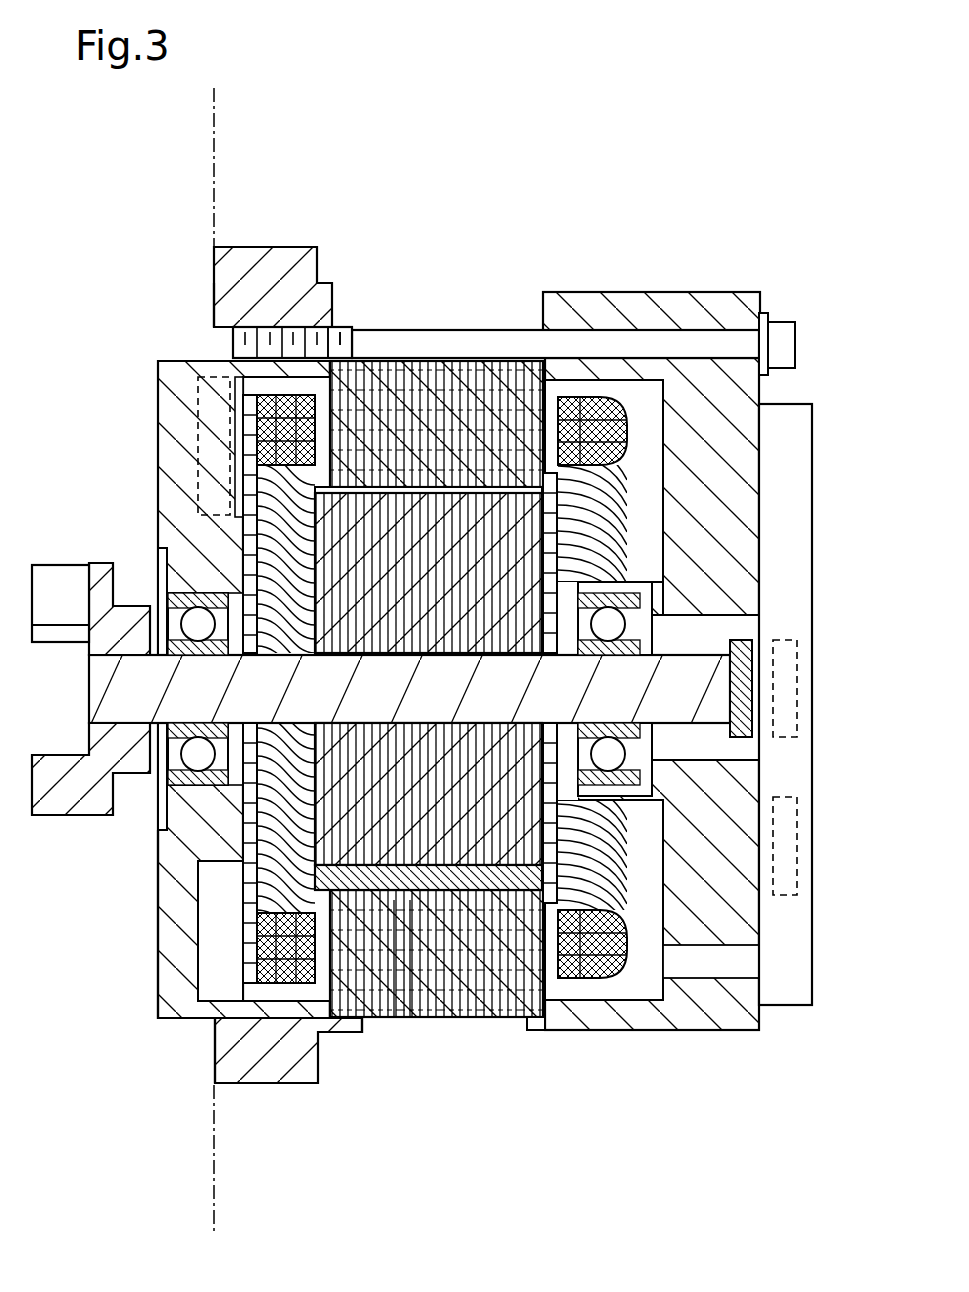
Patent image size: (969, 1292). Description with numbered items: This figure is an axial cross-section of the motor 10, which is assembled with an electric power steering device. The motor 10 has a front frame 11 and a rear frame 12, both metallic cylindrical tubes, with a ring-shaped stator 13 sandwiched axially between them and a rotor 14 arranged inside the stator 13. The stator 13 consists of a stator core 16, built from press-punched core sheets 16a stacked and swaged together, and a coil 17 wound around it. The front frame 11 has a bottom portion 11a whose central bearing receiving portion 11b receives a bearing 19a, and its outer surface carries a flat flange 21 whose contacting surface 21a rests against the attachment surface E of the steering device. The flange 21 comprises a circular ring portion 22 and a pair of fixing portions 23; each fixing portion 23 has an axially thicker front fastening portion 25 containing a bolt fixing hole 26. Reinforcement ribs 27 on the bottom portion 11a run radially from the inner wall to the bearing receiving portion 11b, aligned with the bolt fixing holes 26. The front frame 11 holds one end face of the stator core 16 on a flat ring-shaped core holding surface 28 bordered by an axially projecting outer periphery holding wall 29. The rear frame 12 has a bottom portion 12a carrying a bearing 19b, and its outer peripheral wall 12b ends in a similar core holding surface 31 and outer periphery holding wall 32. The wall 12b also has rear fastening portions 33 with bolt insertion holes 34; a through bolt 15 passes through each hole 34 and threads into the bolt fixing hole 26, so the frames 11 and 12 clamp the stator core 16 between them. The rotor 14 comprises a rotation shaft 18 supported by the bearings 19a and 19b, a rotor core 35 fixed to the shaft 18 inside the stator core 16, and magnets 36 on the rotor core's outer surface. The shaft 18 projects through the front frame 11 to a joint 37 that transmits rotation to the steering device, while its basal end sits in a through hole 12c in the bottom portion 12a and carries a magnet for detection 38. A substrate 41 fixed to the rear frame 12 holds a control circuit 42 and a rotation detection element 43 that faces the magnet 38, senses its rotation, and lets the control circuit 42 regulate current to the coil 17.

The motor 10 is at (633, 222).
The front frame 11 is at (158, 407).
The bottom portion 11a is at (185, 928).
The bearing receiving portion 11b is at (198, 558).
The rear frame 12 is at (762, 436).
The bottom portion 12a is at (740, 510).
The outer peripheral wall 12b is at (600, 1030).
The through hole 12c is at (757, 628).
The stator 13 is at (620, 975).
The rotor 14 is at (323, 868).
The through bolt 15 is at (468, 332).
The stator core 16 is at (462, 1018).
The core sheets 16a is at (410, 1010).
The coil 17 is at (625, 478).
The rotation shaft 18 is at (105, 678).
The bearing 19a is at (185, 770).
The bearing 19b is at (640, 637).
The flange 21 is at (302, 1083).
The contacting surface 21a is at (214, 300).
The circular ring portion 22 is at (247, 1075).
The fixing portions 23 is at (277, 262).
The front fastening portion 25 is at (333, 327).
The bolt fixing hole 26 is at (338, 345).
The reinforcement ribs 27 is at (220, 443).
The core holding surface 28 is at (360, 377).
The outer periphery holding wall 29 is at (355, 1032).
The core holding surface 31 is at (530, 378).
The outer periphery holding wall 32 is at (530, 1032).
The rear fastening portions 33 is at (720, 300).
The bolt insertion hole 34 is at (640, 345).
The rotor core 35 is at (418, 750).
The magnets 36 is at (517, 875).
The joint 37 is at (45, 815).
The magnet for detection 38 is at (745, 737).
The substrate 41 is at (787, 1005).
The control circuit 42 is at (797, 847).
The rotation detection element 43 is at (797, 688).
The attachment surface E is at (214, 137).